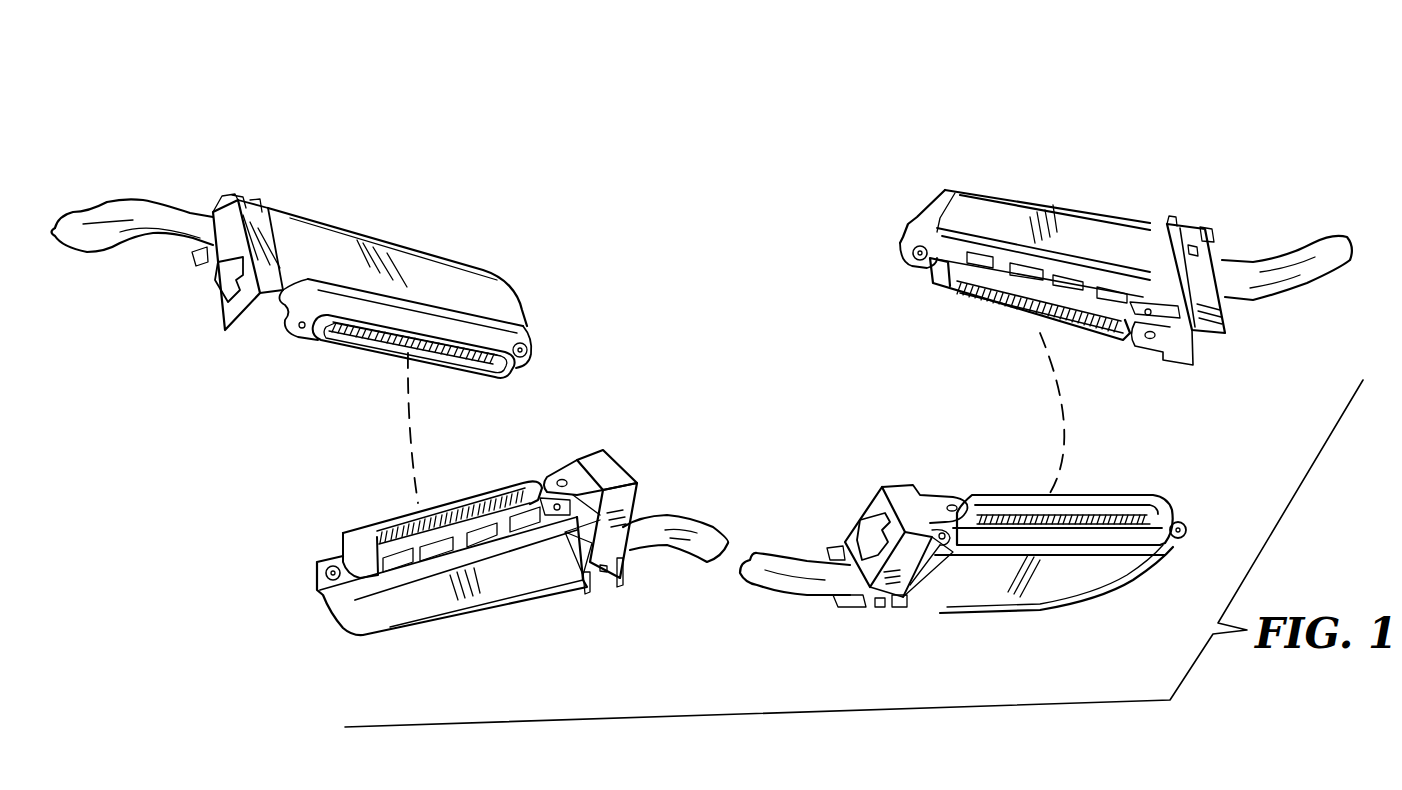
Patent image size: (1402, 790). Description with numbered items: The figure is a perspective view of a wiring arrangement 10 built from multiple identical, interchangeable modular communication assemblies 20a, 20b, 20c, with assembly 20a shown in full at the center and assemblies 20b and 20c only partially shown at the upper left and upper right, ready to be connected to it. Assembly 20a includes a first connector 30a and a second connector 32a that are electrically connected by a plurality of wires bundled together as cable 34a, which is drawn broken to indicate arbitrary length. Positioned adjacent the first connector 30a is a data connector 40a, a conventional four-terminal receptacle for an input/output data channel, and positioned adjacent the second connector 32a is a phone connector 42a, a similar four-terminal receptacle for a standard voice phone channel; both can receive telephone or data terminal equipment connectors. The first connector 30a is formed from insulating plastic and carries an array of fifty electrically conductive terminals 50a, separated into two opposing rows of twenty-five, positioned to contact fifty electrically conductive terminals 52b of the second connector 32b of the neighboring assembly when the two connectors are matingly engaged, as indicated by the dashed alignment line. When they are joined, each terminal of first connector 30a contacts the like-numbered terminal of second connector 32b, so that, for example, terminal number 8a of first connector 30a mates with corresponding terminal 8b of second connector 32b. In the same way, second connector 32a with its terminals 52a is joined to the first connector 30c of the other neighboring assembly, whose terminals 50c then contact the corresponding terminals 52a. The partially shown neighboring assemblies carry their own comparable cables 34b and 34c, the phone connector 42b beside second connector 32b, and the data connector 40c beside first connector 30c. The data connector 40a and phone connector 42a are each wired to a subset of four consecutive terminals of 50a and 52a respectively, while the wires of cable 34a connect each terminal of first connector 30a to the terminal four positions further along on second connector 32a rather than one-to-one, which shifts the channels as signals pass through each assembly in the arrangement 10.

The wiring arrangement 10 is at (799, 104).
The modular communication assembly 20a is at (821, 655).
The modular communication assembly 20b is at (224, 167).
The modular communication assembly 20c is at (1200, 168).
The first connector 30a is at (481, 646).
The first connector 30c is at (992, 180).
The second connector 32a is at (1068, 619).
The second connector 32b is at (423, 224).
The cable 34a is at (717, 594).
The cable 34b is at (101, 264).
The cable 34c is at (1316, 298).
The data connector 40a is at (634, 461).
The data connector 40c is at (1238, 344).
The phone connector 42a is at (897, 479).
The phone connector 42b is at (230, 336).
The electrically conductive terminals 50a is at (380, 537).
The electrically conductive terminals 50c is at (987, 303).
The electrically conductive terminals 52a is at (1163, 507).
The electrically conductive terminals 52b is at (512, 360).
The terminal number 8a is at (473, 507).
The terminal number 8b is at (436, 362).